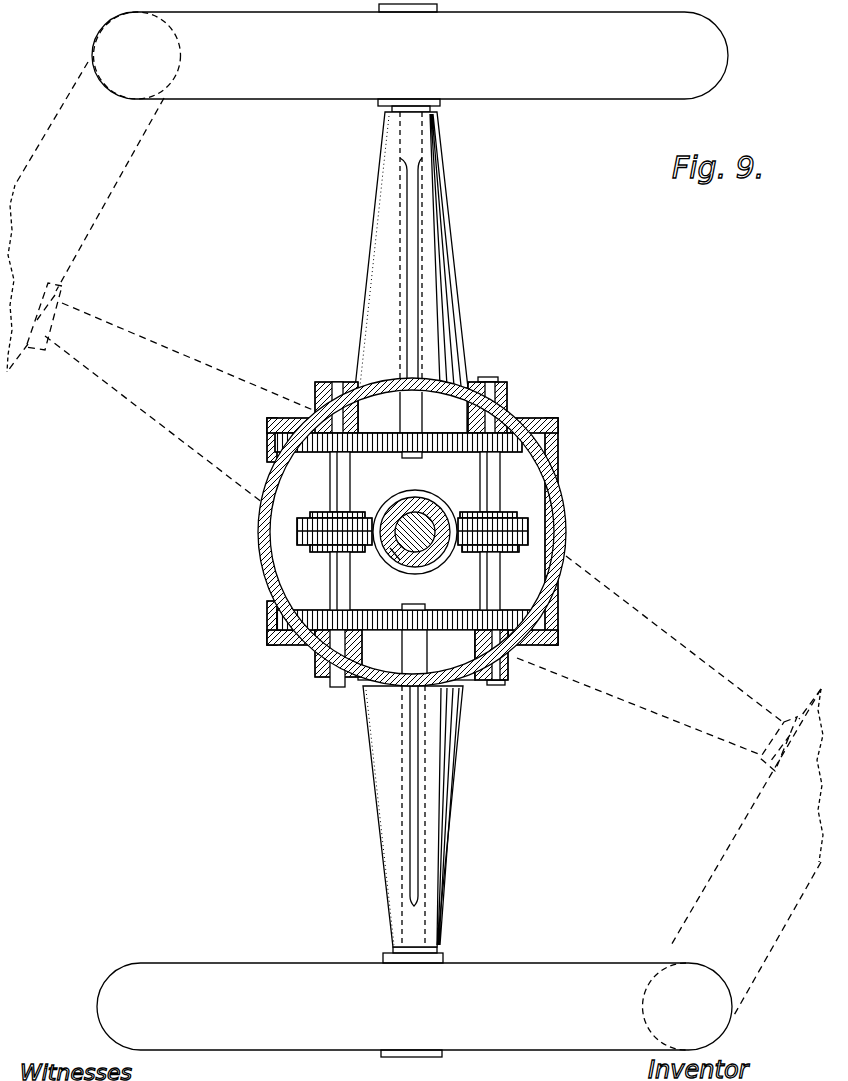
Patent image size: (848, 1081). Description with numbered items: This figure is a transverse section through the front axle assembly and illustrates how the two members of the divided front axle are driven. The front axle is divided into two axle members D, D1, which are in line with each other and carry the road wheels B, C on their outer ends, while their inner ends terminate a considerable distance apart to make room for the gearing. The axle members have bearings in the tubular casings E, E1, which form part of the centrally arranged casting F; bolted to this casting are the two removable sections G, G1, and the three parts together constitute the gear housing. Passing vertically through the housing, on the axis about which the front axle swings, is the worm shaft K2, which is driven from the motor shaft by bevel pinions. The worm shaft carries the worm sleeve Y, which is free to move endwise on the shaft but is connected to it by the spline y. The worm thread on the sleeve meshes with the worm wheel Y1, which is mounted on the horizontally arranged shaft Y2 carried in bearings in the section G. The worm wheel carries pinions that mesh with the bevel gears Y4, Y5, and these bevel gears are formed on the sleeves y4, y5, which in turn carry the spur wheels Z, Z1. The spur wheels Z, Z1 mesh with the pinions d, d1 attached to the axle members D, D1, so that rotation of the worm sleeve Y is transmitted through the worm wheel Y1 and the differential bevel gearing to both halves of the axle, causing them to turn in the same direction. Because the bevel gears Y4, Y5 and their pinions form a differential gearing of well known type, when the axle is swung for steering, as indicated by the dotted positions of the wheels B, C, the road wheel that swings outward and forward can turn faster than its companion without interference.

The road wheel B is at (410, 58).
The road wheel C is at (414, 1002).
The tubular casing E is at (398, 250).
The tubular casing E1 is at (391, 816).
The axle member D is at (412, 408).
The axle member D1 is at (412, 661).
The horizontally arranged shaft Y2 is at (336, 381).
The spur wheel Z1 is at (278, 444).
The spur wheel Z is at (283, 622).
The pinion d is at (410, 454).
The pinion d1 is at (411, 608).
The sleeve y5 is at (330, 488).
The bevel gear Y5 is at (353, 512).
The worm wheel Y1 is at (297, 531).
The bevel gear Y4 is at (519, 547).
The sleeve y4 is at (335, 580).
The removable housing section G is at (312, 549).
The removable housing section G1 is at (523, 505).
The worm shaft K2 is at (422, 512).
The central casting F is at (427, 560).
The spline y is at (390, 548).
The worm sleeve Y is at (388, 544).